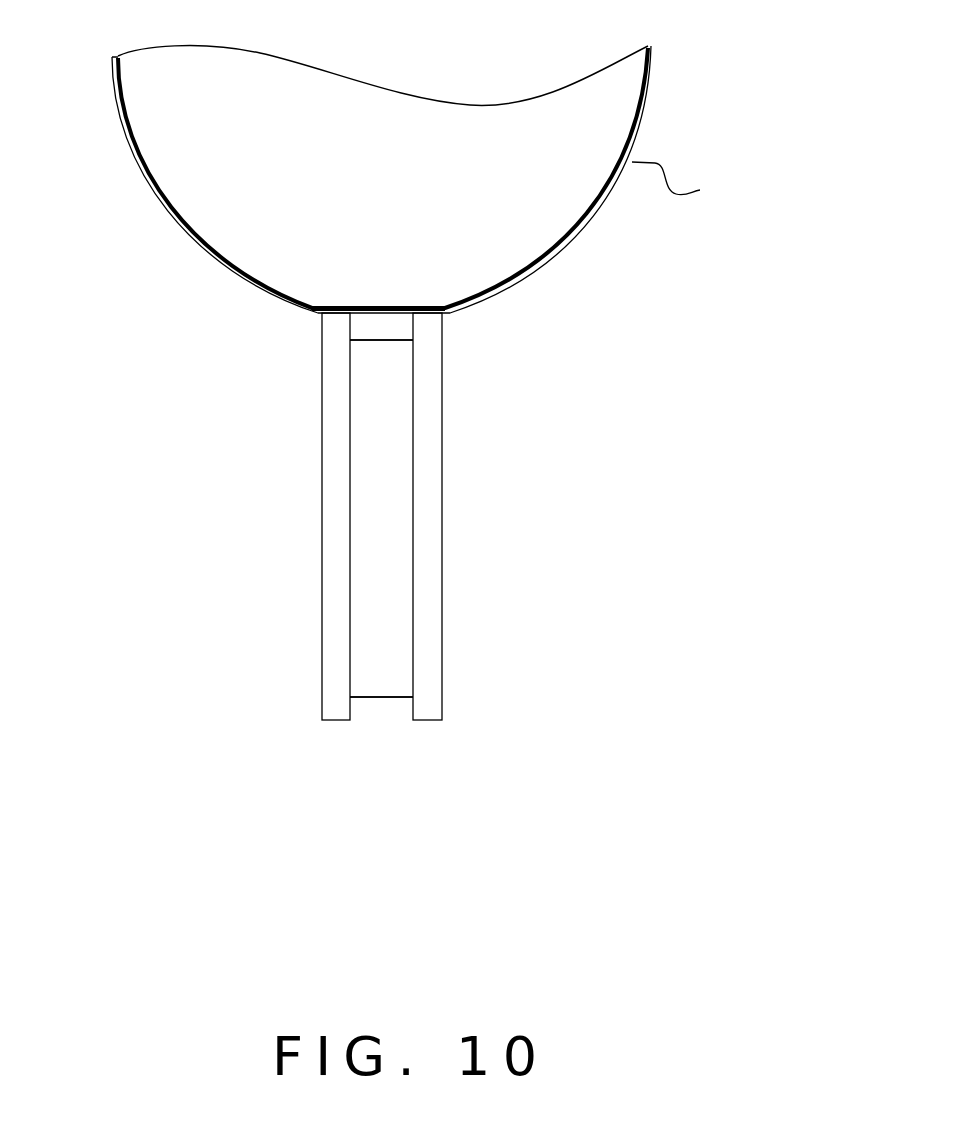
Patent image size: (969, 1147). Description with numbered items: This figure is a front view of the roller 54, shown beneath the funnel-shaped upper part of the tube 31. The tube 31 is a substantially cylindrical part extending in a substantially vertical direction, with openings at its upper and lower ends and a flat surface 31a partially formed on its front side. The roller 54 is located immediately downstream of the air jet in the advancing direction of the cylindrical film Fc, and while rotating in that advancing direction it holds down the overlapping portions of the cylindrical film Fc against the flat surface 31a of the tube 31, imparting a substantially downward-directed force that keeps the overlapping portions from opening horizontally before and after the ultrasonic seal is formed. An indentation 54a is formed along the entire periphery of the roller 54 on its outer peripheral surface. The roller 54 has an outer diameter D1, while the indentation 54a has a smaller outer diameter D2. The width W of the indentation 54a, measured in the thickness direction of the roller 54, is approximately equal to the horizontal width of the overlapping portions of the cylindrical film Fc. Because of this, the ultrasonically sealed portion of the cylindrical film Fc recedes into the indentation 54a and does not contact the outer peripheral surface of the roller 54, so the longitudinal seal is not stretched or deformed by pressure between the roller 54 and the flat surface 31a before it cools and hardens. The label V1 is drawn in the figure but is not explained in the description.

The tube 31 is at (640, 106).
The cylindrical film Fc is at (687, 187).
The flat surface 31a is at (354, 316).
The upper volume region V1 is at (378, 316).
The roller 54 is at (390, 514).
The indentation 54a is at (391, 735).
The outer diameter of the roller D1 is at (258, 718).
The outer diameter of the indentation D2 is at (306, 340).
The width of the indentation W is at (349, 587).